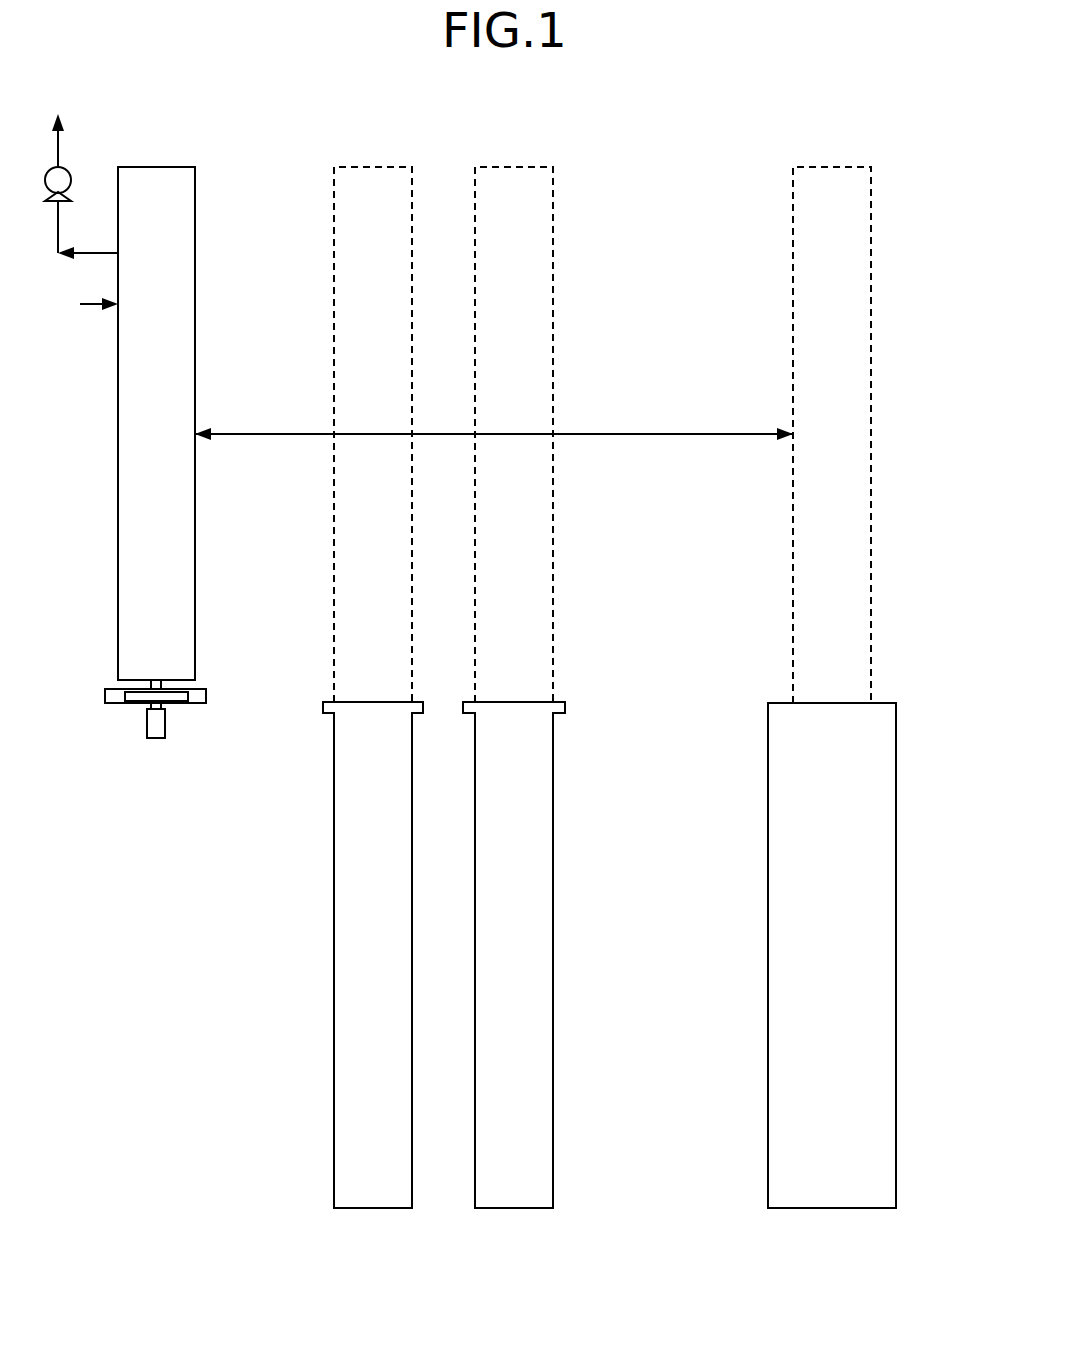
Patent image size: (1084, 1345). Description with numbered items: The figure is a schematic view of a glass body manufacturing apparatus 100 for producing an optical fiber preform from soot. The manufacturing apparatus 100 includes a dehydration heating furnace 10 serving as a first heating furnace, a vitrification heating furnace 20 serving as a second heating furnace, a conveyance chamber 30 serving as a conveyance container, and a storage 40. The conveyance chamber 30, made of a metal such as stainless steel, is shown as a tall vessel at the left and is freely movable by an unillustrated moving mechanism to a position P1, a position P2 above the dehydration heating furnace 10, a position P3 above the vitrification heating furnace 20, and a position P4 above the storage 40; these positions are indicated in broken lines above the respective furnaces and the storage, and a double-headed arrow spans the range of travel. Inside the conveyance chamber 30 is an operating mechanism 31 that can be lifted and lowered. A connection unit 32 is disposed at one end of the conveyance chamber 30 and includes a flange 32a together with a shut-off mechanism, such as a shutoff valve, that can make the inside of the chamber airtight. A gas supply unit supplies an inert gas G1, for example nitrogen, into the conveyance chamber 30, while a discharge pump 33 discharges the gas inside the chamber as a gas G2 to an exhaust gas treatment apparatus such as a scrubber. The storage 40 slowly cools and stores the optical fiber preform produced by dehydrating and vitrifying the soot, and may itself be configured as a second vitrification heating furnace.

The manufacturing apparatus 100 is at (903, 160).
The dehydration heating furnace 10 is at (334, 955).
The vitrification heating furnace 20 is at (553, 955).
The conveyance chamber 30 is at (210, 307).
The operating mechanism 31 is at (166, 722).
The connection unit 32 is at (202, 683).
The flange 32a is at (207, 697).
The discharge pump 33 is at (71, 180).
The storage 40 is at (896, 955).
The gas G1 is at (80, 305).
The gas G2 is at (88, 242).
The position P1 is at (158, 156).
The position P2 is at (376, 156).
The position P3 is at (517, 156).
The position P4 is at (835, 156).